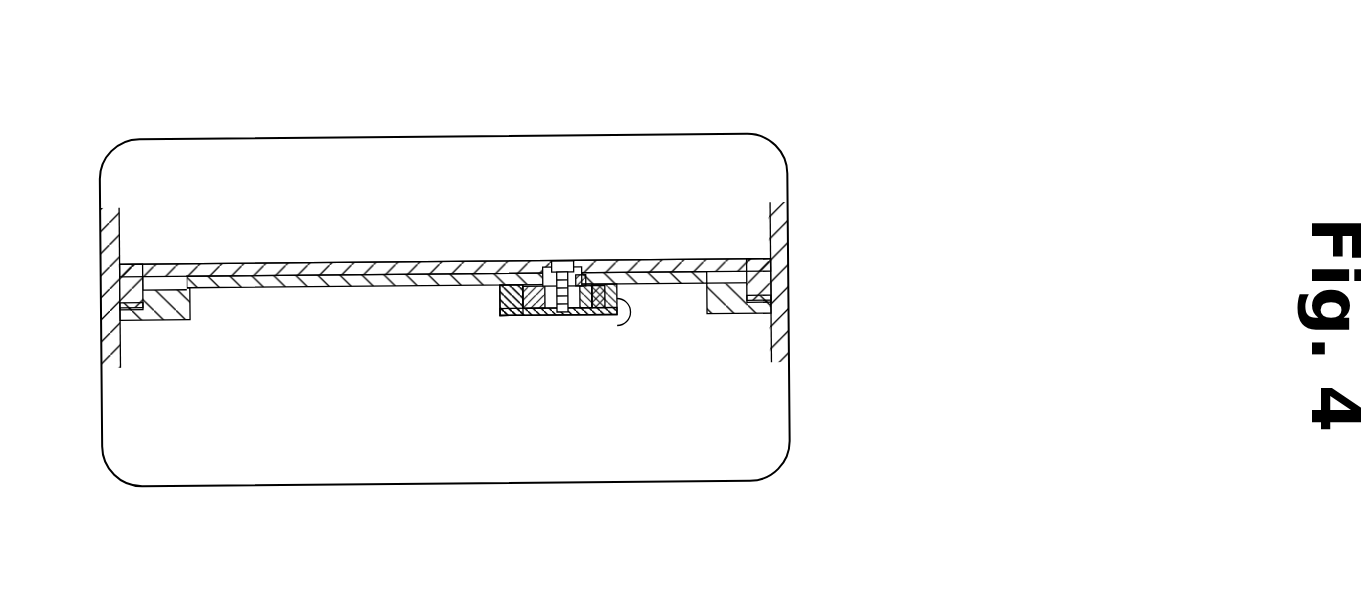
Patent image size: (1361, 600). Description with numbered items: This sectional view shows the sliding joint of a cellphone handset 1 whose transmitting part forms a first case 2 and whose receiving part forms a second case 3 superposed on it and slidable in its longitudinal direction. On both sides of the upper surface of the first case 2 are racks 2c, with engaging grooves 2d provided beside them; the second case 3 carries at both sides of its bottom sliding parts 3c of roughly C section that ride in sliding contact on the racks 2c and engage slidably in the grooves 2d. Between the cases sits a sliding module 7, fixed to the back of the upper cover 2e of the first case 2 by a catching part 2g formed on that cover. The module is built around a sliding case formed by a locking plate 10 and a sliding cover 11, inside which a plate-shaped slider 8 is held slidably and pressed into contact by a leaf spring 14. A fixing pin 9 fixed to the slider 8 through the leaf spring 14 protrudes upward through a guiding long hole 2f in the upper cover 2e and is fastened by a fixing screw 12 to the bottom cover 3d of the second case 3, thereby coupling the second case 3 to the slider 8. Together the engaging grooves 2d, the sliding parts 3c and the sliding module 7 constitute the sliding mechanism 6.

The cellphone handset 1 is at (812, 116).
The first case 2 is at (458, 487).
The rack 2c is at (118, 287).
The engaging groove 2d is at (160, 302).
The upper cover 2e is at (405, 287).
The guiding long hole 2f is at (591, 296).
The catching part 2g is at (626, 332).
The second case 3 is at (539, 136).
The sliding part 3c is at (131, 260).
The bottom cover 3d is at (346, 262).
The sliding mechanism 6 is at (480, 312).
The sliding module 7 is at (545, 318).
The slider 8 is at (515, 300).
The fixing pin 9 is at (558, 269).
The locking plate 10 is at (591, 313).
The sliding cover 11 is at (526, 286).
The fixing screw 12 is at (567, 273).
The leaf spring 14 is at (581, 284).